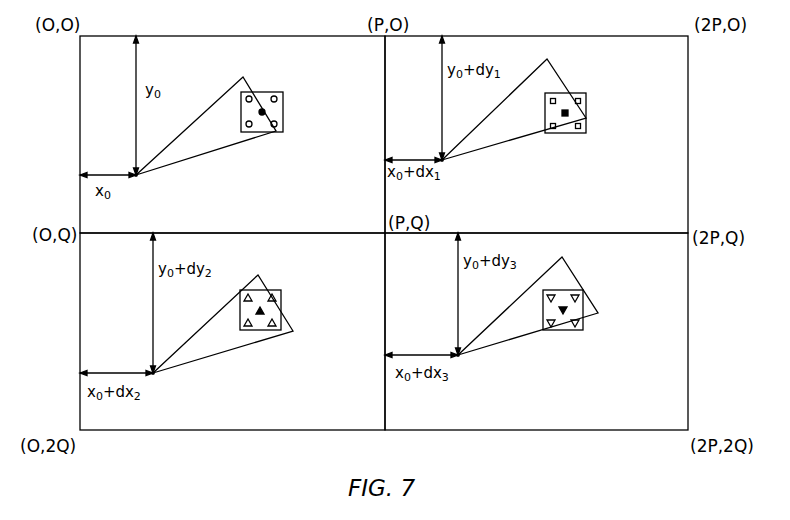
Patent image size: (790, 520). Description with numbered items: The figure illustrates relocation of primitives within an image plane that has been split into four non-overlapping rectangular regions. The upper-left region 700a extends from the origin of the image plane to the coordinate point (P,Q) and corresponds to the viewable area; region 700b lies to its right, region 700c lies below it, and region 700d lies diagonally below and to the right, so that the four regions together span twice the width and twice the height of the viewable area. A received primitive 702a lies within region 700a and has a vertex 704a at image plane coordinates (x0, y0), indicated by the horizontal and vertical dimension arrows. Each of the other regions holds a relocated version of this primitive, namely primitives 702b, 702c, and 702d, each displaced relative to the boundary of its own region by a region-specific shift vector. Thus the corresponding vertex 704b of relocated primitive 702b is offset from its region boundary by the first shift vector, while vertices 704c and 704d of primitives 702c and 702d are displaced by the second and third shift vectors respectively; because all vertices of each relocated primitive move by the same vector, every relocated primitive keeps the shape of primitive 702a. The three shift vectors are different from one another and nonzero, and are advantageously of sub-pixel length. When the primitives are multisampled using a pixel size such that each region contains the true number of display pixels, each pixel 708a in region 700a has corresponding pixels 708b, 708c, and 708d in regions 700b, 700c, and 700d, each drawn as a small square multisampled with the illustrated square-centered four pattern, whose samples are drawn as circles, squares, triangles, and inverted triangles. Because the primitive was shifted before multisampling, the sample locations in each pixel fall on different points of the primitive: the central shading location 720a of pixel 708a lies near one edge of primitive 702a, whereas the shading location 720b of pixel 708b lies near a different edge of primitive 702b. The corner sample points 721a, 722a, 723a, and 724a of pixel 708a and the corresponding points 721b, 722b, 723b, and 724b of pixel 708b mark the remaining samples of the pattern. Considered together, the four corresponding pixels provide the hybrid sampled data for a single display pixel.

The region 700a is at (363, 222).
The region 700b is at (666, 222).
The region 700c is at (362, 421).
The region 700d is at (665, 419).
The primitive 702a is at (177, 142).
The relocated primitive 702b is at (482, 122).
The relocated primitive 702c is at (195, 342).
The relocated primitive 702d is at (497, 322).
The vertex 704a is at (138, 178).
The vertex 704b is at (444, 163).
The vertex 704c is at (155, 377).
The vertex 704d is at (460, 358).
The pixel 708a is at (283, 92).
The pixel 708b is at (587, 93).
The pixel 708c is at (282, 290).
The pixel 708d is at (582, 290).
The shading location 720a is at (265, 112).
The shading location 720b is at (569, 114).
The upper-left sample point 721a is at (250, 96).
The upper-left sample point 721b is at (550, 100).
The upper-right sample point 722a is at (277, 99).
The upper-right sample point 722b is at (581, 100).
The lower-left sample point 723a is at (250, 127).
The lower-left sample point 723b is at (554, 129).
The lower-right sample point 724a is at (276, 127).
The lower-right sample point 724b is at (580, 129).